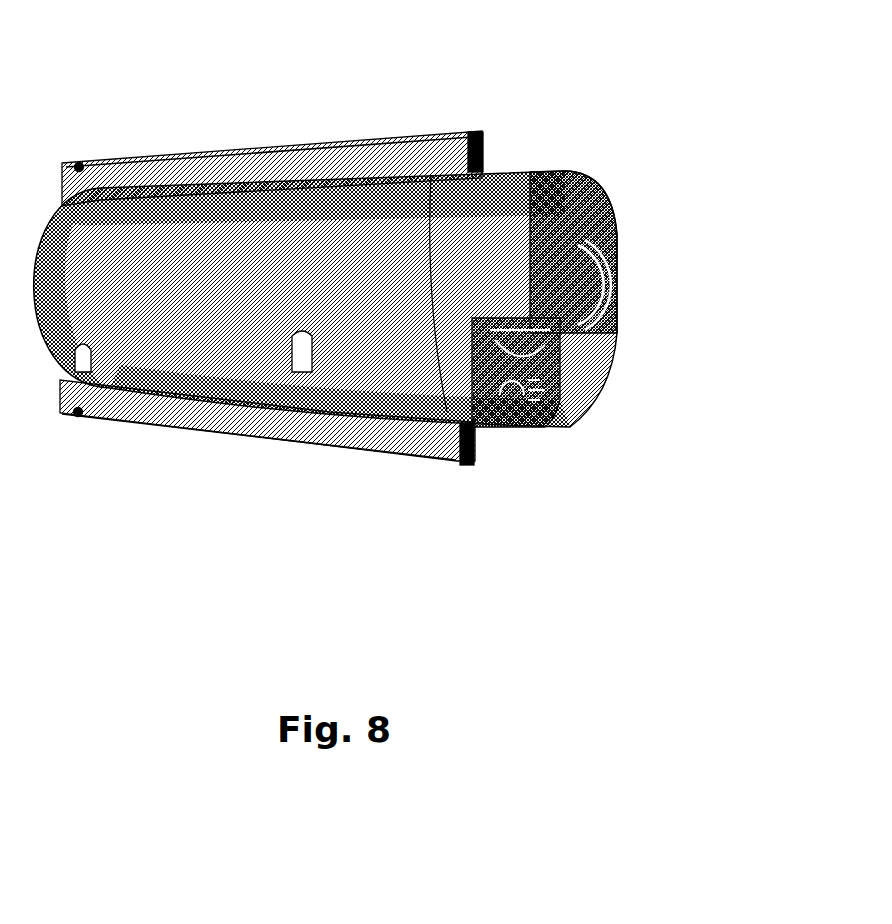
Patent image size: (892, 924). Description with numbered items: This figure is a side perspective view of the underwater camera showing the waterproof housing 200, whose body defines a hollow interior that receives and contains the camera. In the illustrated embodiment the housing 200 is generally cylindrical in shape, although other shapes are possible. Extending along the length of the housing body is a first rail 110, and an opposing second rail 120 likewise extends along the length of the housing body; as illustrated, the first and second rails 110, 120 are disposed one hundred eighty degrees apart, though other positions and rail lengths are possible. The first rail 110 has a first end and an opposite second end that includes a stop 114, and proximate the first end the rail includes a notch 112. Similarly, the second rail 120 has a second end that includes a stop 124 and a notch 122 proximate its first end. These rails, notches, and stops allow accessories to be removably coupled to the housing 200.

The first rail 110 is at (262, 180).
The notch 112 is at (80, 163).
The stop 114 is at (478, 132).
The second rail 120 is at (248, 428).
The notch 122 is at (77, 416).
The stop 124 is at (462, 458).
The waterproof housing 200 is at (592, 191).